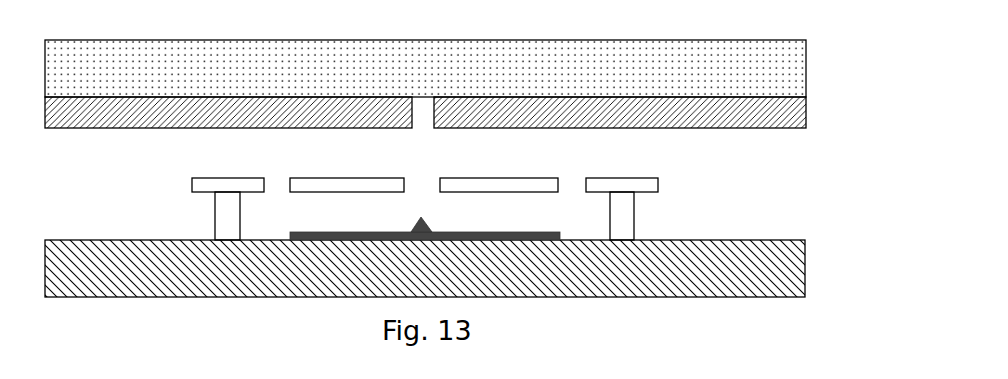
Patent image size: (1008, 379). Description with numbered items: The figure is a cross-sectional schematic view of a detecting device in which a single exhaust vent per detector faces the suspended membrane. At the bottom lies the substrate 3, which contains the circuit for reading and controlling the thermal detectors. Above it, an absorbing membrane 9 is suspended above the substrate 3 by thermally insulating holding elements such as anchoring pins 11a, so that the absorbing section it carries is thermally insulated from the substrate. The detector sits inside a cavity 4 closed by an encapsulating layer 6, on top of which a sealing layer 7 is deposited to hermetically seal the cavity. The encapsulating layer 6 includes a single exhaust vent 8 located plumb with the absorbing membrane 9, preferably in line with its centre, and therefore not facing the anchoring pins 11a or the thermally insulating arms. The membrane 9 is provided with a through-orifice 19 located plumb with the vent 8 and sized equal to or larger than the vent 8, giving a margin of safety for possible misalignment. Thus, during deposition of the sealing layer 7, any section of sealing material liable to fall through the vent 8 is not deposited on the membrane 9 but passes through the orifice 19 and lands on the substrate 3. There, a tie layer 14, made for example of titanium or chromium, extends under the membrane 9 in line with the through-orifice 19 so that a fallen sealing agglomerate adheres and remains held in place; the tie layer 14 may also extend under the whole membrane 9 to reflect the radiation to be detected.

The substrate 3 is at (812, 260).
The cavity 4 is at (140, 194).
The encapsulating layer 6 is at (806, 115).
The sealing layer 7 is at (806, 70).
The exhaust vent 8 is at (425, 88).
The absorbing membrane 9 is at (500, 178).
The anchoring pin 11a is at (635, 217).
The tie layer 14 is at (527, 234).
The through-orifice 19 is at (428, 172).